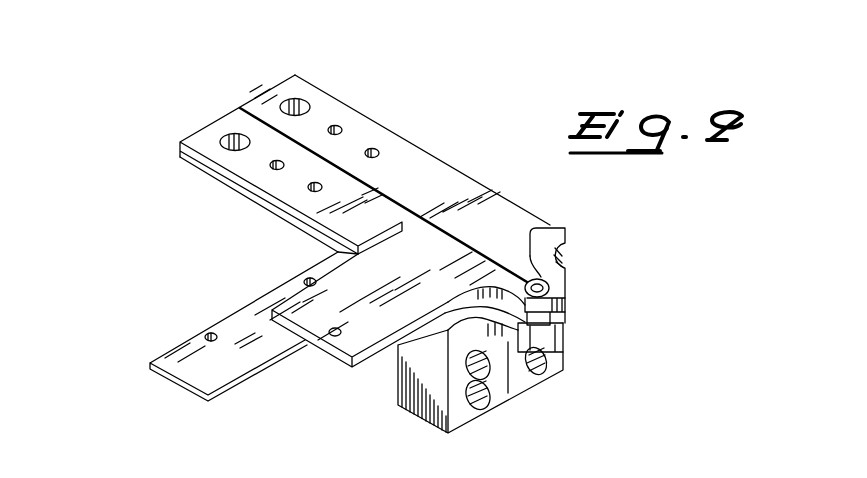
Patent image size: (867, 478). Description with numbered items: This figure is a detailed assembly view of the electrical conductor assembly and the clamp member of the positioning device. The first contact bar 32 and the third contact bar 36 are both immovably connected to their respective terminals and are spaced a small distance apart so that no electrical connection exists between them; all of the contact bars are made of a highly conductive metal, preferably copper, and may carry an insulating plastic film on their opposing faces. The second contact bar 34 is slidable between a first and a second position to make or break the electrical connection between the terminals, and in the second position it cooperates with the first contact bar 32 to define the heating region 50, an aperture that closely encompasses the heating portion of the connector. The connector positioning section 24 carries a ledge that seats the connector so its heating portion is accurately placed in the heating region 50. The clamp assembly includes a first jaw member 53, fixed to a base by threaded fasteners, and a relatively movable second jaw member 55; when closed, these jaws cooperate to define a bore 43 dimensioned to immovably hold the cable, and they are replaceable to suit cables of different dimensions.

The first electrically conductive contact bar 32 is at (415, 148).
The third electrically conductive contact bar 36 is at (258, 189).
The connector positioning section 24 is at (277, 217).
The second electrically conductive contact bar 34 is at (343, 340).
The heating region 50 is at (550, 228).
The bore 43 is at (545, 322).
The first jaw member 53 is at (563, 336).
The second jaw member 55 is at (487, 339).